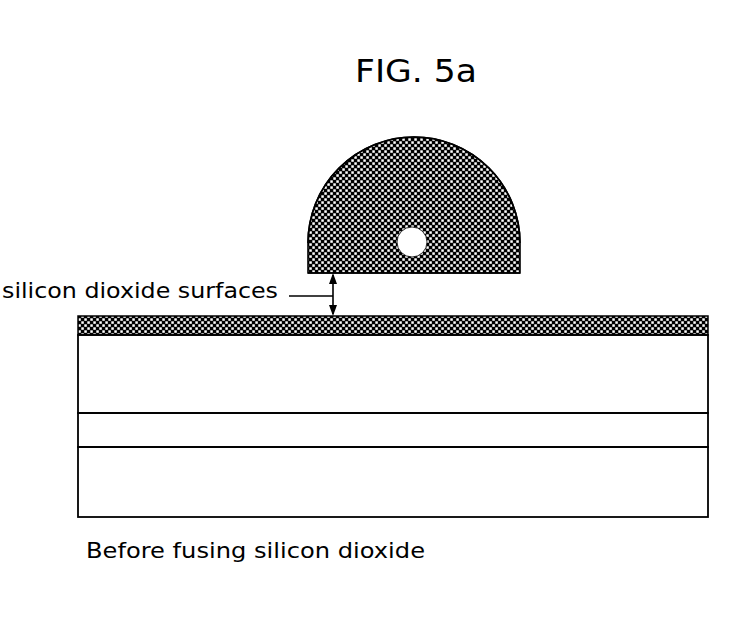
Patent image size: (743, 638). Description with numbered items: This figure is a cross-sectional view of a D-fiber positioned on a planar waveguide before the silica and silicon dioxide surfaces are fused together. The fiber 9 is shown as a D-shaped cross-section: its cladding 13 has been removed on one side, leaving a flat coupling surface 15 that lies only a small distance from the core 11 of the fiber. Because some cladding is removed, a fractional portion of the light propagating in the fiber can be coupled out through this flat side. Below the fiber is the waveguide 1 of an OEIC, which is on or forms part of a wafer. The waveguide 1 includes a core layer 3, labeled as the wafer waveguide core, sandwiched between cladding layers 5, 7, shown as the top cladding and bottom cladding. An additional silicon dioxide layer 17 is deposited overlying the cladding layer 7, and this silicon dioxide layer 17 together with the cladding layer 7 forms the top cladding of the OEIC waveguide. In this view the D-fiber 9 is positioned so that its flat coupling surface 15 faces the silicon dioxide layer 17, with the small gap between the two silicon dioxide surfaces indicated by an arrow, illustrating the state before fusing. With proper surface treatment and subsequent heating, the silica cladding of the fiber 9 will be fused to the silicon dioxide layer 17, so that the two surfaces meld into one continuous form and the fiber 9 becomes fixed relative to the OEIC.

The waveguide 1 is at (363, 385).
The core layer 3 is at (78, 423).
The cladding layer 5 is at (78, 376).
The cladding layer 7 is at (78, 477).
The fiber 9 is at (428, 205).
The core 11 is at (413, 248).
The cladding 13 is at (437, 168).
The flat coupling surface 15 is at (490, 273).
The silicon dioxide layer 17 is at (78, 322).